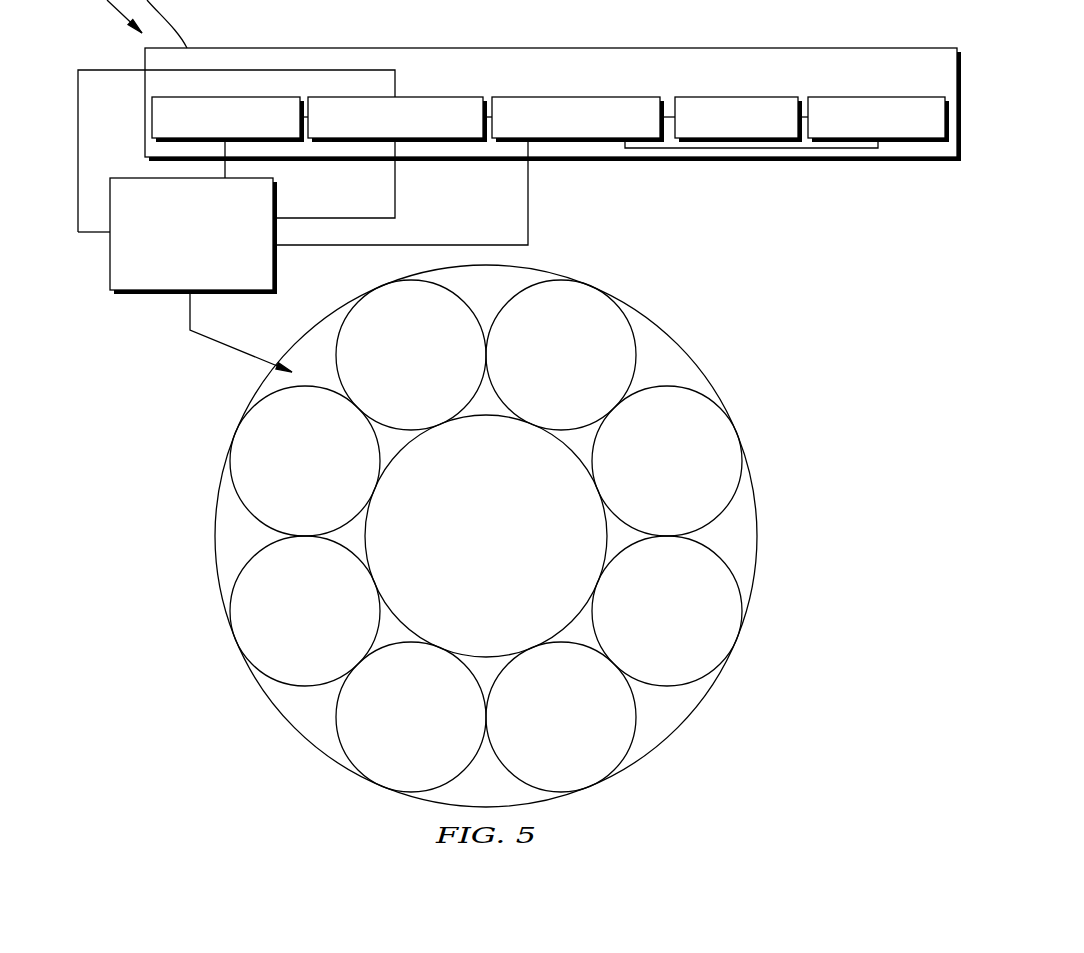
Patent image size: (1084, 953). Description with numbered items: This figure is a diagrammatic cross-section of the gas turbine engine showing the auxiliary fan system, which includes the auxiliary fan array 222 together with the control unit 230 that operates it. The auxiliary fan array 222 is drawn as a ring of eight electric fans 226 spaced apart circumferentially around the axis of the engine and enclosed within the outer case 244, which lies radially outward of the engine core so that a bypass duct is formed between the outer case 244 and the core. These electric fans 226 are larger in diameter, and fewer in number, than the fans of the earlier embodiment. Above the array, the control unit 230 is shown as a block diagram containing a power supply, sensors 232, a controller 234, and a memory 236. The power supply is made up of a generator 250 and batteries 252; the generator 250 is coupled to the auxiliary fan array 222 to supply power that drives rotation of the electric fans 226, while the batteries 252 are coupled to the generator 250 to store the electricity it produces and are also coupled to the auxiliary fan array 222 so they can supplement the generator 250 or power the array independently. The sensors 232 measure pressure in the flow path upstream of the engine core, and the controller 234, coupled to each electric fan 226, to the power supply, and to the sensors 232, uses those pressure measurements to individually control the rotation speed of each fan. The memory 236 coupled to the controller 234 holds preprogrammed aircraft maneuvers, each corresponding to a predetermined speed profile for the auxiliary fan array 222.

The auxiliary fan array 222 is at (145, 292).
The electric fan 226 is at (388, 333).
The control unit 230 is at (552, 103).
The sensors 232 is at (860, 97).
The controller 234 is at (648, 97).
The memory 236 is at (733, 97).
The outer case 244 is at (213, 568).
The generator 250 is at (428, 97).
The batteries 252 is at (223, 97).